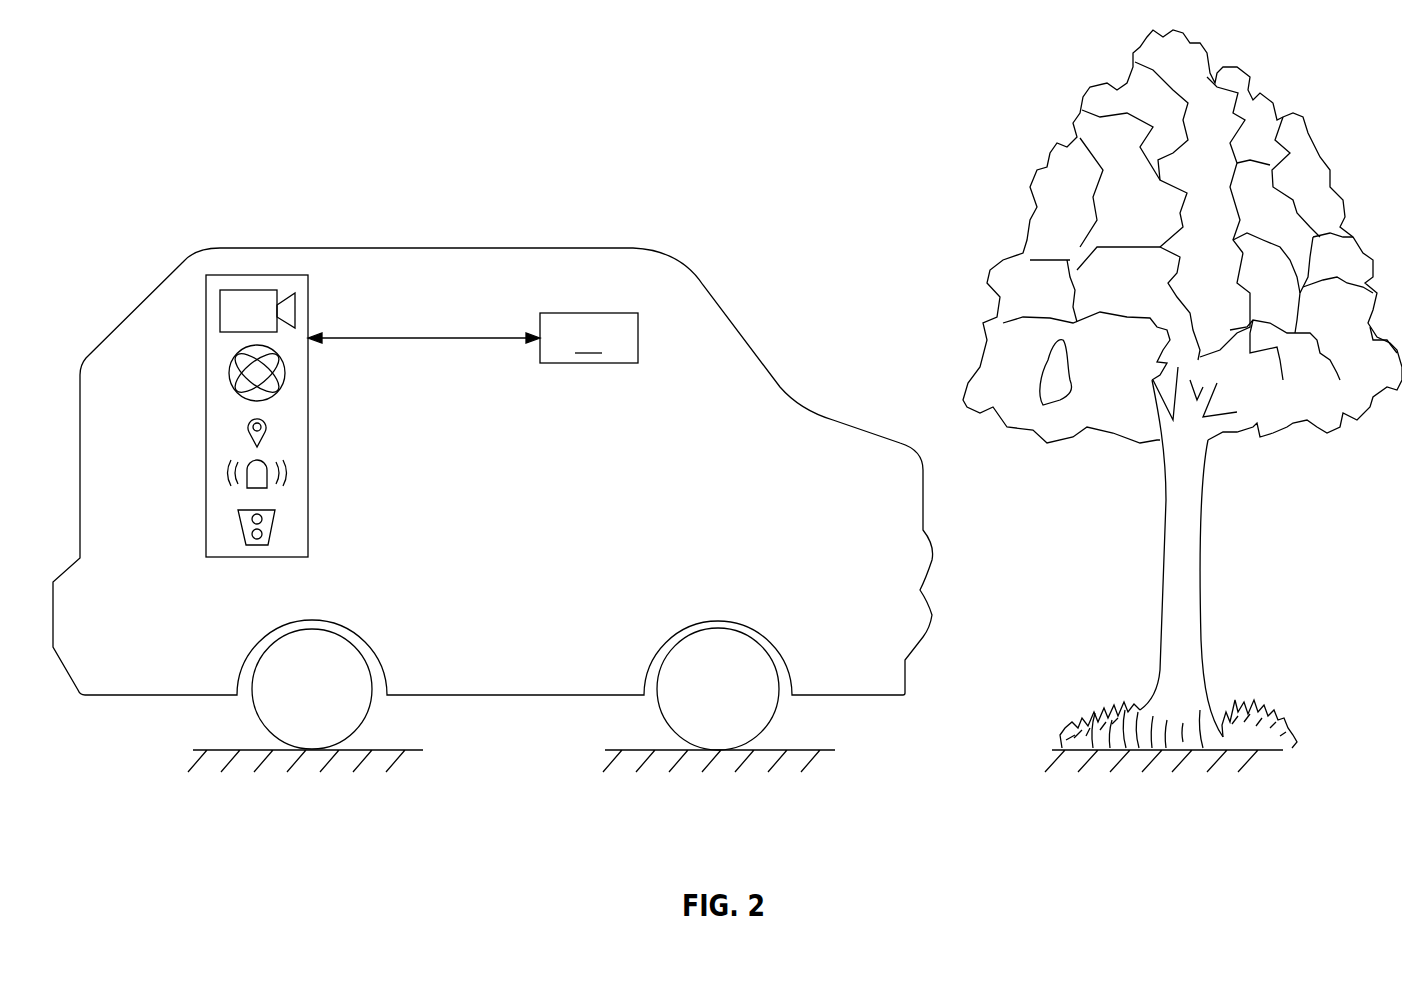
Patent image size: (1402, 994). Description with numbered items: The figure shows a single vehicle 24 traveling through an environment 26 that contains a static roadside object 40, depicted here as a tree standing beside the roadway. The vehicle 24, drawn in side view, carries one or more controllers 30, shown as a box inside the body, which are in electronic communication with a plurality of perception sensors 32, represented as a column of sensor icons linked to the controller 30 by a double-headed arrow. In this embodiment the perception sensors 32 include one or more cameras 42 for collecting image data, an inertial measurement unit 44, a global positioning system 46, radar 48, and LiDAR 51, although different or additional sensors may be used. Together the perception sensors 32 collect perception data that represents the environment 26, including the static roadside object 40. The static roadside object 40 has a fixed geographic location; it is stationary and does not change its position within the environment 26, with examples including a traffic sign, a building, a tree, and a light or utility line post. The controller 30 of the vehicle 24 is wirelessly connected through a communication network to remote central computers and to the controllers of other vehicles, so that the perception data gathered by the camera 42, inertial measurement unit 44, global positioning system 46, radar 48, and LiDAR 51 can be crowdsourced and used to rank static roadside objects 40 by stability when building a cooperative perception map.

The vehicle 24 is at (703, 287).
The environment 26 is at (1020, 105).
The controller 30 is at (473, 338).
The perception sensor 32 is at (258, 277).
The static roadside object 40 is at (1197, 575).
The camera 42 is at (297, 312).
The inertial measurement unit 44 is at (285, 373).
The global positioning system 46 is at (267, 428).
The radar 48 is at (270, 475).
The LiDAR 51 is at (270, 528).